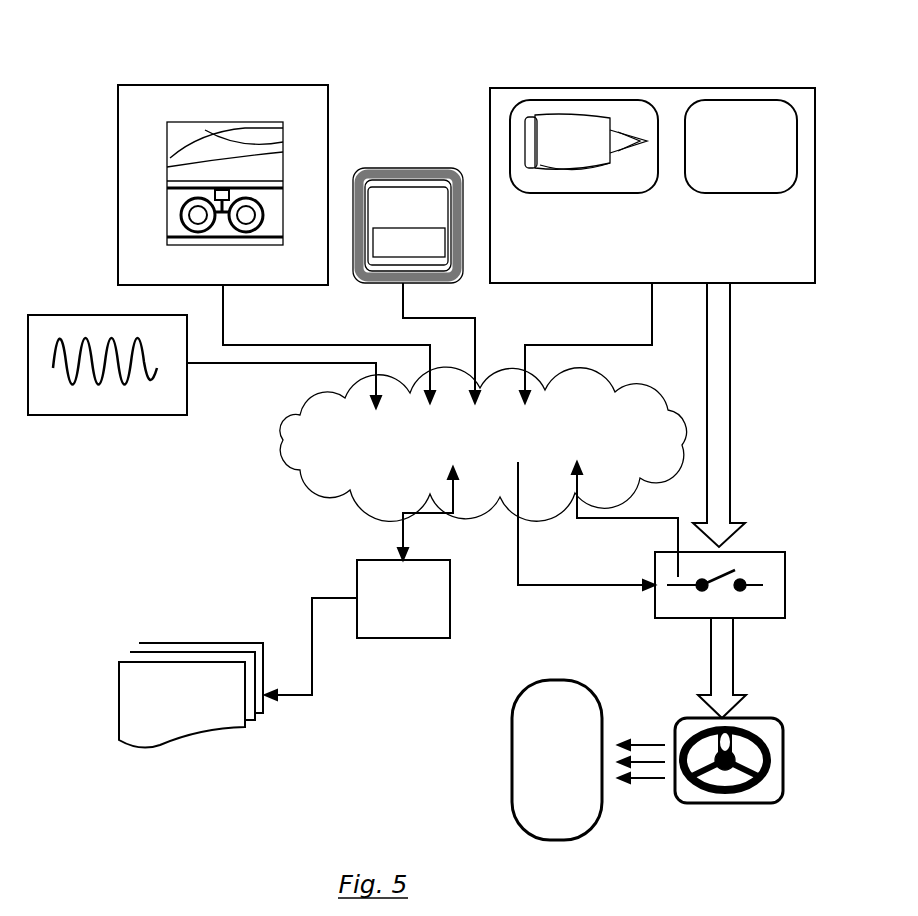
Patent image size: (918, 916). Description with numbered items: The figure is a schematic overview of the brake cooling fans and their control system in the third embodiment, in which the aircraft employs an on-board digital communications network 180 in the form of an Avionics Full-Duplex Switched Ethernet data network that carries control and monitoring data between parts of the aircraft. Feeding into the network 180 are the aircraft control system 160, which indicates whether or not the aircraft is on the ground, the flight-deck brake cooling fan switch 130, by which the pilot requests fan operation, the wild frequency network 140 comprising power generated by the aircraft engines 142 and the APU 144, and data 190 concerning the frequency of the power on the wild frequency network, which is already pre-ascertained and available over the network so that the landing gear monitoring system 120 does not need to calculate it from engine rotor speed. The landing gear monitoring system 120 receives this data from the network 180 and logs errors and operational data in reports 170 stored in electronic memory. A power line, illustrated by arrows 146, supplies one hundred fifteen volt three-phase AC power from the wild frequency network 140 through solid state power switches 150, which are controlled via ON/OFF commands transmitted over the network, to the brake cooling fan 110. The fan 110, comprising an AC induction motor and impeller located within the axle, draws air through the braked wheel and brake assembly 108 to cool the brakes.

The braked wheel 108 is at (576, 777).
The brake cooling fan 110 is at (695, 792).
The landing gear monitoring system 120 is at (380, 612).
The brake cooling fan switch 130 is at (422, 240).
The wild frequency network 140 is at (545, 95).
The aircraft engine 142 is at (636, 112).
The APU 144 is at (745, 112).
The power line 146 is at (718, 367).
The solid state power switch 150 is at (773, 565).
The aircraft control system 160 is at (274, 103).
The report 170 is at (158, 710).
The on-board digital communications network 180 is at (287, 432).
The data concerning the frequency of the power 190 is at (128, 398).